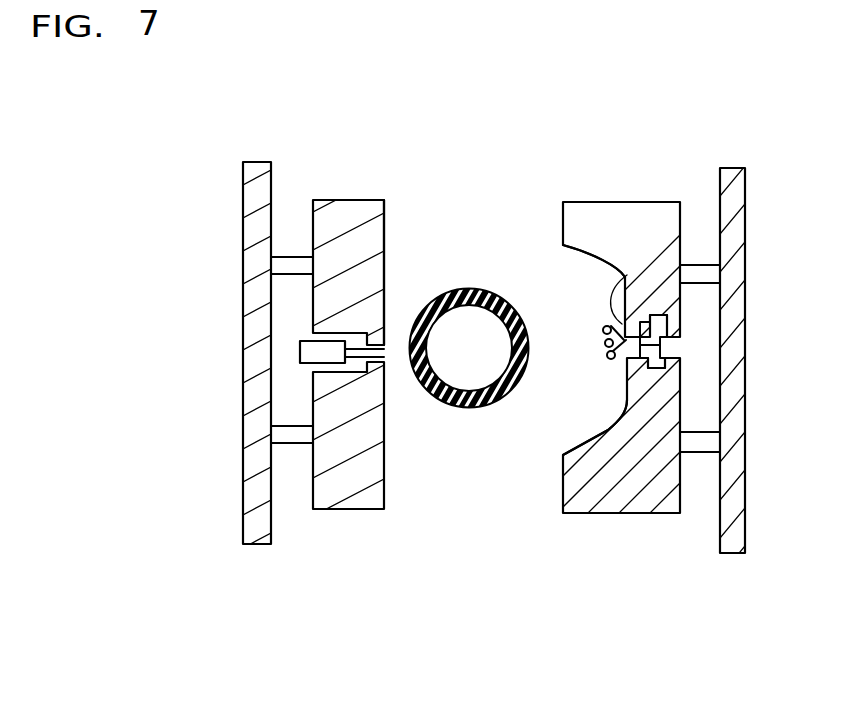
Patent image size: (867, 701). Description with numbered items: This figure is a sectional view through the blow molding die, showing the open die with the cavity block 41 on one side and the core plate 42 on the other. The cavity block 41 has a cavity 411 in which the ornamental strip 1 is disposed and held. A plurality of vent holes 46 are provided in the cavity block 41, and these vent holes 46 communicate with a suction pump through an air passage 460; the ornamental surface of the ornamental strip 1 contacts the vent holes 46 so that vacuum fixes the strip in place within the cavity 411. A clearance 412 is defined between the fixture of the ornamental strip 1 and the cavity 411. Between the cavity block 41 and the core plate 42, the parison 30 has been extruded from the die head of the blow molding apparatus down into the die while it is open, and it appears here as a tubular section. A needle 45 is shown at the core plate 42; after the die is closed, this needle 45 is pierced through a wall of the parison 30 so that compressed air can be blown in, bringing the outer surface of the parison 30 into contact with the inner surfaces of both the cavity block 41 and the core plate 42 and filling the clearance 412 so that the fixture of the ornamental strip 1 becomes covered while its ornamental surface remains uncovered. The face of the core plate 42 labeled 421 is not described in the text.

The ornamental strip 1 is at (605, 332).
The parison 30 is at (470, 407).
The cavity block 41 is at (643, 228).
The cavity 411 is at (593, 433).
The clearance 412 is at (623, 268).
The core plate 42 is at (327, 237).
The end face of holder block 421 is at (385, 240).
The needle 45 is at (323, 347).
The vent holes 46 is at (655, 316).
The air passage 460 is at (655, 362).